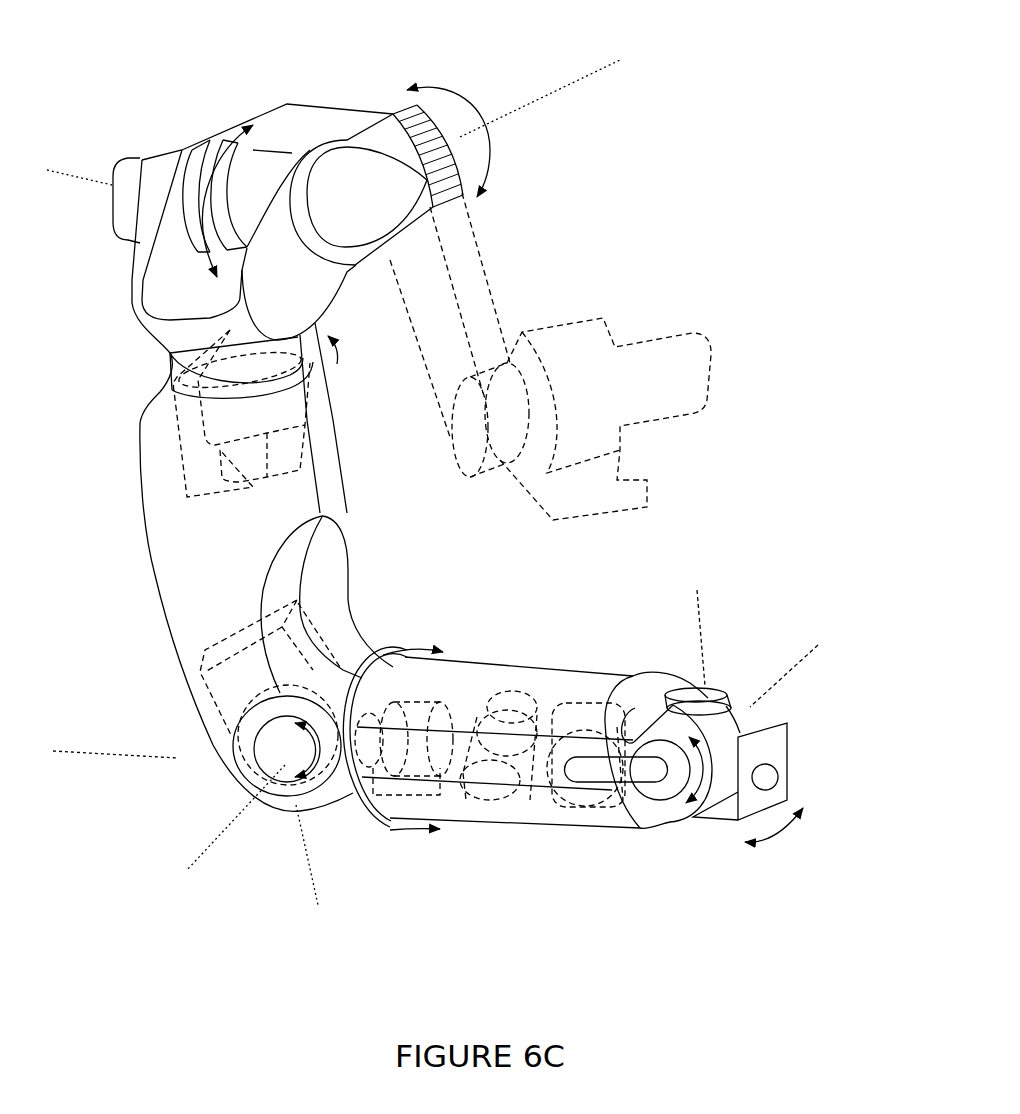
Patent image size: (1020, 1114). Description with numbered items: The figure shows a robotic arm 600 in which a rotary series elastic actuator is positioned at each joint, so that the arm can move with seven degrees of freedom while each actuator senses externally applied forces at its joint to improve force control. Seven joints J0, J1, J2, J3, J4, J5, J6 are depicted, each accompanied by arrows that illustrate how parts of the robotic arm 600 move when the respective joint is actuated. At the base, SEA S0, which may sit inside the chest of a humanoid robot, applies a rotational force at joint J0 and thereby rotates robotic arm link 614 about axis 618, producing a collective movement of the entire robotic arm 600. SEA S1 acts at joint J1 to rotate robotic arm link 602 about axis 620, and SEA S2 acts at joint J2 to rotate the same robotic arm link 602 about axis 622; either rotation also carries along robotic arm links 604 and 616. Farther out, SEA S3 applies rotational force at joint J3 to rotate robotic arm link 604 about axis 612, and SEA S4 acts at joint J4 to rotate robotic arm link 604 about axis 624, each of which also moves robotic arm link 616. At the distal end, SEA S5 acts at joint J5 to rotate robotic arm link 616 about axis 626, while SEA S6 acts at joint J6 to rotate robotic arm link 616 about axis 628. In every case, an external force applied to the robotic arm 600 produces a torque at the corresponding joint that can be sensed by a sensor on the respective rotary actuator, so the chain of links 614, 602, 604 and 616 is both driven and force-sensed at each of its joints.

The robotic arm 600 is at (150, 1011).
The robotic arm link 602 is at (68, 406).
The robotic arm link 604 is at (358, 886).
The axis 612 is at (210, 846).
The robotic arm link 614 is at (113, 73).
The robotic arm link 616 is at (815, 892).
The axis 618 is at (575, 76).
The axis 620 is at (82, 169).
The axis 622 is at (323, 890).
The axis 624 is at (115, 747).
The axis 626 is at (785, 668).
The axis 628 is at (697, 618).
The joint J0 is at (487, 135).
The joint J1 is at (210, 263).
The joint J2 is at (148, 362).
The joint J3 is at (310, 745).
The joint J4 is at (422, 650).
The joint J5 is at (748, 712).
The joint J6 is at (775, 842).
The SEA S0 is at (582, 320).
The SEA S1 is at (192, 143).
The SEA S2 is at (317, 400).
The SEA S3 is at (329, 632).
The SEA S4 is at (394, 802).
The SEA S5 is at (486, 802).
The SEA S6 is at (587, 813).